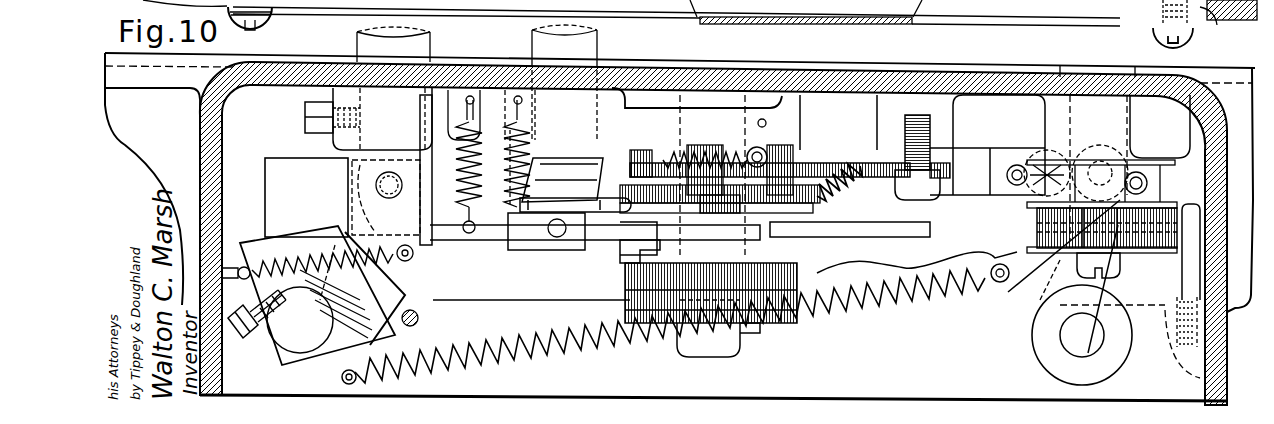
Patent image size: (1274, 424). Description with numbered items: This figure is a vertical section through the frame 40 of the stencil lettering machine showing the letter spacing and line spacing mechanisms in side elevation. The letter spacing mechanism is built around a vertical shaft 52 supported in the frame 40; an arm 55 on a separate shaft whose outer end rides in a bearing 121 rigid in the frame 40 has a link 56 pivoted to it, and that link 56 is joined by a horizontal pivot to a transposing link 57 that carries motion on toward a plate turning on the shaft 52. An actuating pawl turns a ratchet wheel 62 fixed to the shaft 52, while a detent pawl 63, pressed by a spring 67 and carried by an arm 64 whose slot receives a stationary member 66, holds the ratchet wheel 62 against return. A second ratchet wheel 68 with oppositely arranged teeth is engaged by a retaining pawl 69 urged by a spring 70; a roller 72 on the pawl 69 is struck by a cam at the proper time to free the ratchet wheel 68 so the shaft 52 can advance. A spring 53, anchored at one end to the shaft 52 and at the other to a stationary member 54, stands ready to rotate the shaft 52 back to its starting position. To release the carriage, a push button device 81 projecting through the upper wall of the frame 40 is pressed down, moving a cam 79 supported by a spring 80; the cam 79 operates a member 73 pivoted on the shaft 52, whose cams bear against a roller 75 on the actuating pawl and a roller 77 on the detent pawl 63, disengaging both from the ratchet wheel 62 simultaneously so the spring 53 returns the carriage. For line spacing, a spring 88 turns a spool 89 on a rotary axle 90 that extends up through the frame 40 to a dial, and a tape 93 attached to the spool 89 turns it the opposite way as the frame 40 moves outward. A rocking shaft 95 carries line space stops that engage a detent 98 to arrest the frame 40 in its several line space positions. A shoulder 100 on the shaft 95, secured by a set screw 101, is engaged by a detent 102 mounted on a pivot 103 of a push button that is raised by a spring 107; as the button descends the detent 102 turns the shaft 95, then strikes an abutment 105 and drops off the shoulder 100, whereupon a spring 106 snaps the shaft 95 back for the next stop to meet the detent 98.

The frame 40 is at (1222, 195).
The vertical shaft 52 is at (741, 348).
The spring 53 is at (800, 272).
The stationary member 54 is at (633, 251).
The arm 55 is at (1092, 290).
The link 56 is at (1075, 340).
The transposing link 57 is at (993, 160).
The ratchet wheel 62 is at (700, 198).
The detent pawl 63 is at (810, 191).
The arm 64 is at (836, 171).
The stationary member 66 is at (905, 187).
The spring 67 is at (835, 171).
The ratchet wheel 68 is at (641, 150).
The retaining pawl 69 is at (770, 160).
The spring 70 is at (730, 158).
The roller 72 is at (716, 214).
The member 73 is at (583, 233).
The roller 75 is at (742, 215).
The roller 77 is at (798, 226).
The cam 79 is at (556, 185).
The spring 80 is at (506, 186).
The push button device 81 is at (596, 40).
The spring 88 is at (1078, 242).
The spool 89 is at (1027, 205).
The rotary axle 90 is at (1120, 131).
The tape 93 is at (1150, 183).
The shaft 95 is at (302, 320).
The detent 98 is at (300, 168).
The shoulder 100 is at (365, 326).
The set screw 101 is at (252, 342).
The detent 102 is at (426, 252).
The pivot 103 is at (390, 198).
The abutment 105 is at (419, 321).
The spring 106 is at (556, 332).
The spring 107 is at (432, 43).
The bearing 121 is at (1002, 327).